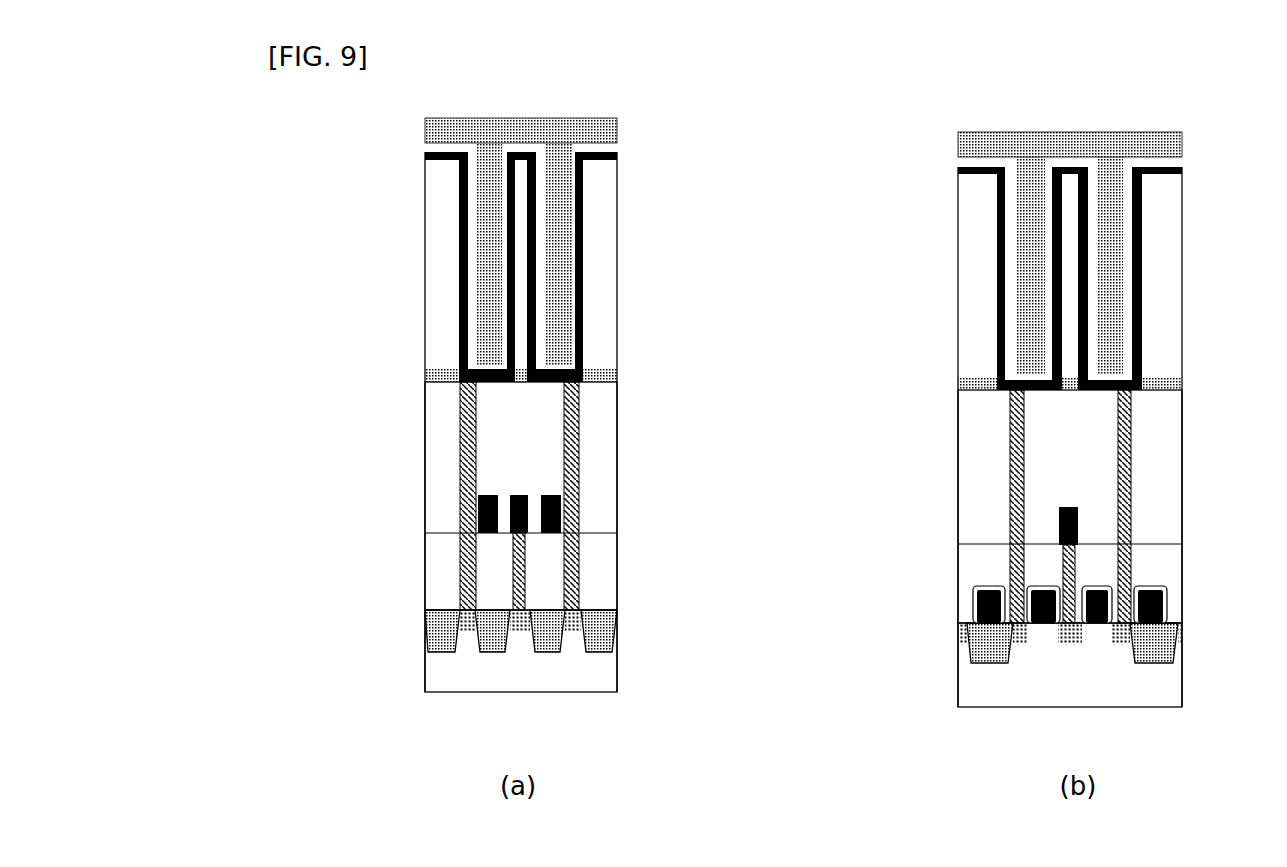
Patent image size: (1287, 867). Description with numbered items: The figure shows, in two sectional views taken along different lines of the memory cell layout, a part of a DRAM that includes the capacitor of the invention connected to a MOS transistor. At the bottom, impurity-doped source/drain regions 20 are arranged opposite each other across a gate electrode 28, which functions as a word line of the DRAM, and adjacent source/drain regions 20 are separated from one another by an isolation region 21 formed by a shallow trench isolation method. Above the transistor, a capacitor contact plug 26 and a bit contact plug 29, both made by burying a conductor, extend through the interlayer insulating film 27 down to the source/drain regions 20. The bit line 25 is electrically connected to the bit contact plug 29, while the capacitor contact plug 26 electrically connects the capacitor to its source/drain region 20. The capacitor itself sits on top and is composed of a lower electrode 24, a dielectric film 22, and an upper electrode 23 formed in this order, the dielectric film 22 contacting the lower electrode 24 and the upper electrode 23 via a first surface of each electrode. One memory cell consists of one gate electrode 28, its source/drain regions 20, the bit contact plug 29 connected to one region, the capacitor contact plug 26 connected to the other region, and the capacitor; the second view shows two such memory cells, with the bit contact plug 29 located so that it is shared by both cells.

The source/drain region 20 is at (522, 627).
The isolation region 21 is at (605, 627).
The dielectric film 22 is at (573, 290).
The upper electrode 23 is at (563, 247).
The lower electrode 24 is at (582, 340).
The bit line 25 is at (560, 513).
The capacitor contact plug 26 is at (573, 430).
The interlayer insulating film 27 is at (597, 468).
The gate electrode 28 is at (1165, 592).
The bit contact plug 29 is at (524, 573).